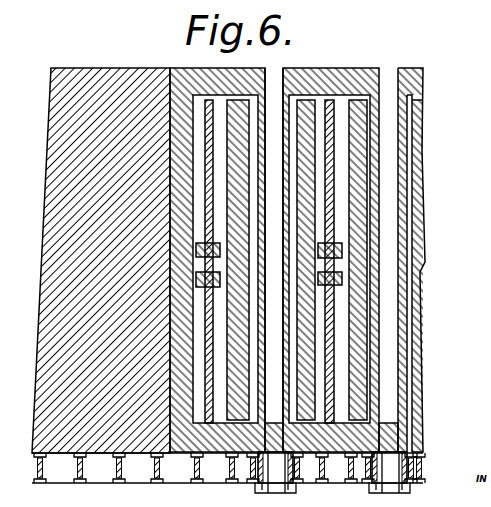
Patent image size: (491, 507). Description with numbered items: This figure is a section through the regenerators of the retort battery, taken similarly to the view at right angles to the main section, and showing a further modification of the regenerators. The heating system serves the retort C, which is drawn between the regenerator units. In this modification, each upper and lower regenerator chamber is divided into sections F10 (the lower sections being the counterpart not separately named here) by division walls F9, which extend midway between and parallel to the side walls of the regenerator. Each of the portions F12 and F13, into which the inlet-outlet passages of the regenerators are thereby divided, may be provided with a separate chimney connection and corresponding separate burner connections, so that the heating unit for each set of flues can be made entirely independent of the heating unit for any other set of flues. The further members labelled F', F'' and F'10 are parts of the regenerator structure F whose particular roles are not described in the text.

The retort C is at (274, 260).
The frame bar F'10 is at (318, 228).
The upper regenerator chamber section F10 is at (336, 100).
The division wall F9 is at (383, 100).
The frame member F' is at (261, 261).
The frame member F'' is at (343, 260).
The inlet-outlet passage portion F12 is at (200, 251).
The inlet-outlet passage portion F13 is at (200, 280).